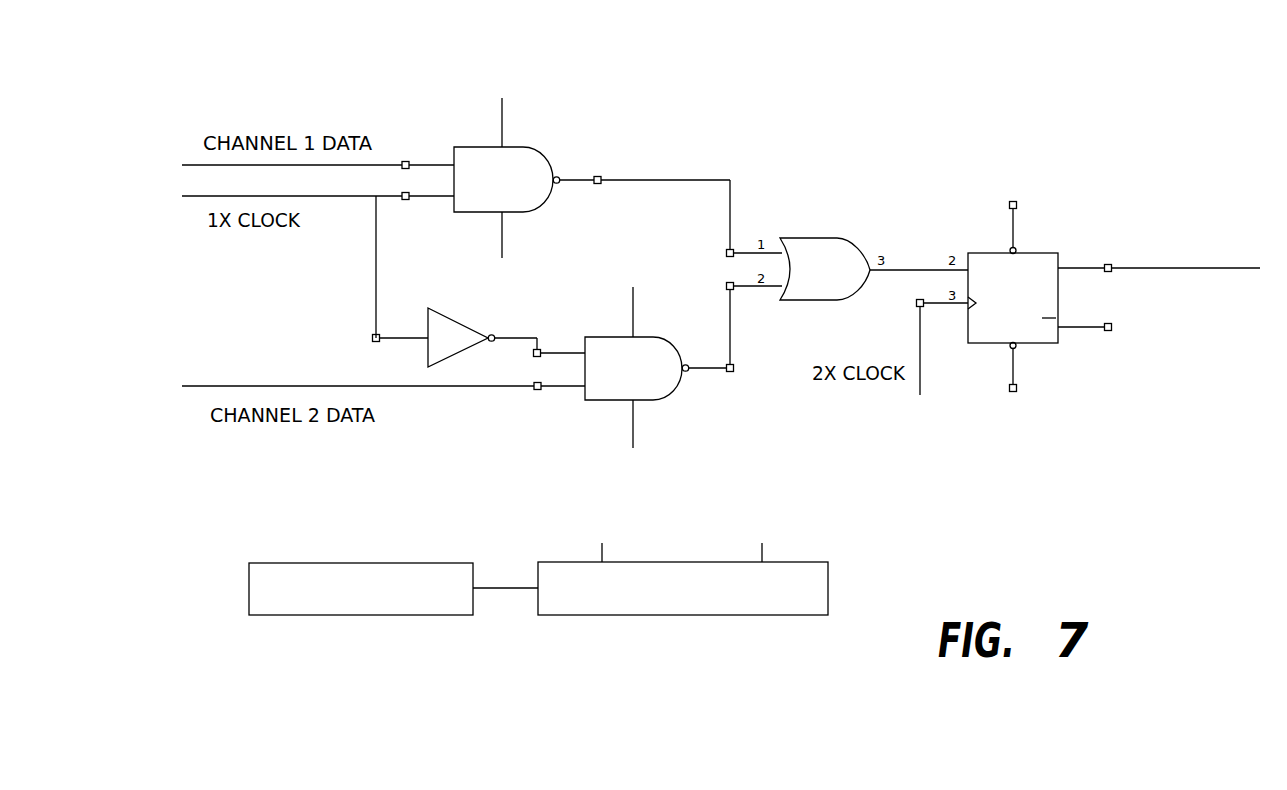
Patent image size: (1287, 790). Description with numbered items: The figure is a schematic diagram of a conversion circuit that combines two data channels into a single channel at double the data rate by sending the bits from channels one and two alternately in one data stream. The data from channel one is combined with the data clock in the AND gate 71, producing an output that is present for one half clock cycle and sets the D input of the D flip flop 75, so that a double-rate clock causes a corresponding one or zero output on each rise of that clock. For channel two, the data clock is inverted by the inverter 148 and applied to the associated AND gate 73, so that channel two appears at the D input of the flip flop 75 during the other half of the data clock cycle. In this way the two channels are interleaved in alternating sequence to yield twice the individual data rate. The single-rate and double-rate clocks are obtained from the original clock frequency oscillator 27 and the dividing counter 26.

The AND gate 71 is at (540, 157).
The AND gate 73 is at (663, 382).
The inverter 148 is at (443, 323).
The D flip flop 75 is at (1030, 255).
The clock frequency oscillator 27 is at (423, 610).
The dividing counter 26 is at (738, 610).